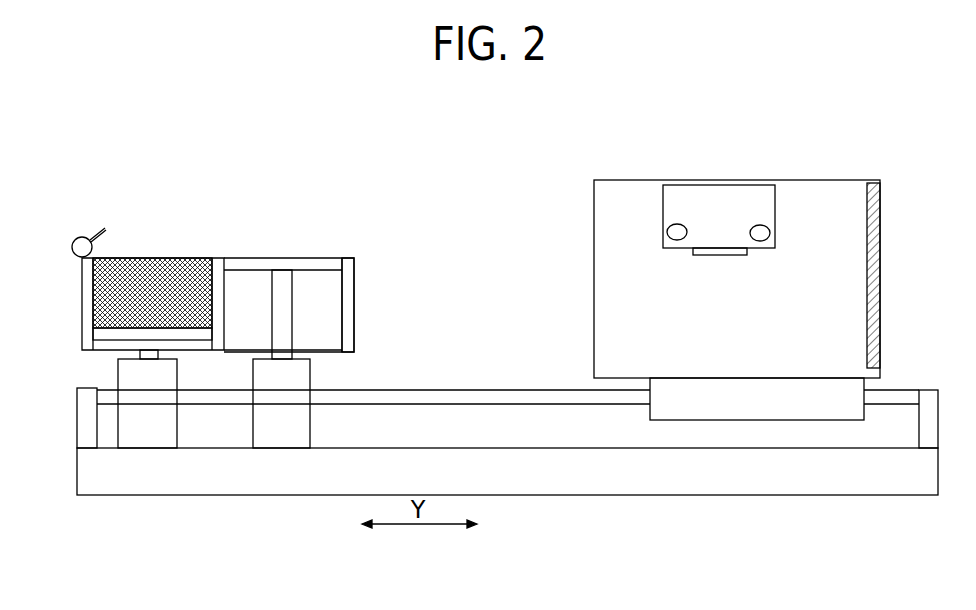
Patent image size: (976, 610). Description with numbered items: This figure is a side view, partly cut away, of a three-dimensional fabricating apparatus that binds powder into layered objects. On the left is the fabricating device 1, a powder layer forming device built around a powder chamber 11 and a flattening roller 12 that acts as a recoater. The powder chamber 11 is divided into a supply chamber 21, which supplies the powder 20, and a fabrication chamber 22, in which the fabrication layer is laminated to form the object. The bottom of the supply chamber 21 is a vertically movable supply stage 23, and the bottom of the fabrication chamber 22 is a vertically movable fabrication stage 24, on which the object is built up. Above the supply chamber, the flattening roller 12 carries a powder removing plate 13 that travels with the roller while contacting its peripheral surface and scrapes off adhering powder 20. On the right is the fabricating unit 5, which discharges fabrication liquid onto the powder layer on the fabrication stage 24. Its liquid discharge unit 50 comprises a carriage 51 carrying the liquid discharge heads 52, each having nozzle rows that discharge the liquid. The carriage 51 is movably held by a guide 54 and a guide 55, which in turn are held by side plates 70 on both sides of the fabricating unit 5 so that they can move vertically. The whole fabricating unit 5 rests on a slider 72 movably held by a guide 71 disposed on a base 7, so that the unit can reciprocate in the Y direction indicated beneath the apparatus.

The fabricating device 1 is at (220, 213).
The fabricating unit 5 is at (620, 167).
The base 7 is at (593, 487).
The powder chamber 11 is at (307, 243).
The flattening roller 12 is at (77, 240).
The powder removing plate 13 is at (102, 230).
The powder 20 is at (153, 267).
The supply chamber 21 is at (85, 275).
The fabrication chamber 22 is at (348, 315).
The supply stage 23 is at (107, 333).
The fabrication stage 24 is at (250, 263).
The liquid discharge unit 50 is at (660, 216).
The carriage 51 is at (712, 202).
The liquid discharge heads 52 is at (723, 247).
The guide 54 is at (765, 230).
The guide 55 is at (677, 225).
The side plates 70 is at (605, 305).
The guide 71 is at (455, 400).
The slider 72 is at (760, 413).